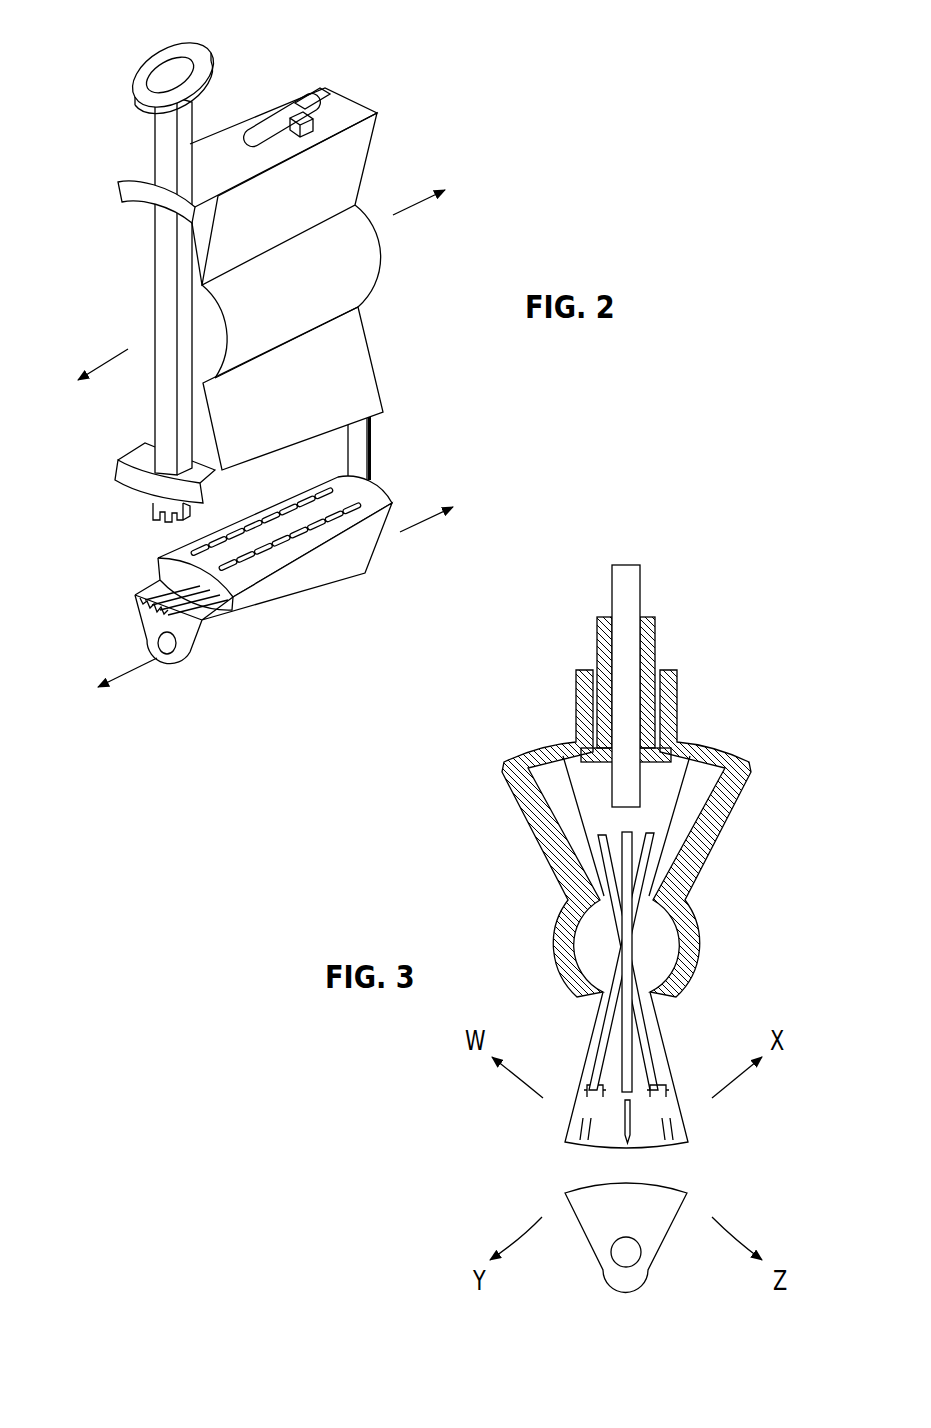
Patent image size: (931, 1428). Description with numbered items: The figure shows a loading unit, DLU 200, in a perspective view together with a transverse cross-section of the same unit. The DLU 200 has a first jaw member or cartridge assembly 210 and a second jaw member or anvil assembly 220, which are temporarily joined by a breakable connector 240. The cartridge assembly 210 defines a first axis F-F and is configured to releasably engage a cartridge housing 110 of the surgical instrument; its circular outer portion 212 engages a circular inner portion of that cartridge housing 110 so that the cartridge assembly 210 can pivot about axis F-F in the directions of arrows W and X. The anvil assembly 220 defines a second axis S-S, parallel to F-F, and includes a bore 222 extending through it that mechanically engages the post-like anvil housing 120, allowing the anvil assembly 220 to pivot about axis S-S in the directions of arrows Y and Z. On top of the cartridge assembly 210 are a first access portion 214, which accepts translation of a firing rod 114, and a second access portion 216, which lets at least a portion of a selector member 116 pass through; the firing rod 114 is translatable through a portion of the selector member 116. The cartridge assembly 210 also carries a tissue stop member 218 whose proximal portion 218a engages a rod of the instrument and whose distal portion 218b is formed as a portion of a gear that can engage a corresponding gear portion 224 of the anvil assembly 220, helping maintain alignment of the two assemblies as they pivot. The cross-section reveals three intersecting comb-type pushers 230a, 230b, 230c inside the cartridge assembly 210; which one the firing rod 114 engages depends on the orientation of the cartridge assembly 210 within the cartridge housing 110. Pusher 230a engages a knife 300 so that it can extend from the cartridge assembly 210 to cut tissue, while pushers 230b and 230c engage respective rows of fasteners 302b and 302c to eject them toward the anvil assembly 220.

In FIG. 2, the DLU 200 is at (291, 368).
In FIG. 2, the cartridge assembly 210 is at (328, 251).
In FIG. 3, the cartridge assembly 210 is at (663, 775).
In FIG. 2, the circular outer portion 212 is at (367, 252).
In FIG. 2, the first access portion 214 is at (300, 123).
In FIG. 2, the second access portion 216 is at (333, 108).
In FIG. 2, the tissue stop member 218 is at (135, 285).
In FIG. 2, the proximal portion 218a is at (137, 63).
In FIG. 2, the distal portion 218b is at (152, 510).
In FIG. 2, the breakable connector 240 is at (373, 460).
In FIG. 2, the anvil assembly 220 is at (251, 574).
In FIG. 3, the anvil assembly 220 is at (633, 1247).
In FIG. 2, the bore 222 is at (168, 643).
In FIG. 2, the portion of anvil assembly 224 is at (217, 595).
In FIG. 3, the firing rod 114 is at (632, 588).
In FIG. 3, the selector member 116 is at (652, 640).
In FIG. 3, the cartridge housing 110 is at (722, 828).
In FIG. 3, the pusher 230a is at (627, 828).
In FIG. 3, the pusher 230b is at (602, 835).
In FIG. 3, the pusher 230c is at (650, 833).
In FIG. 3, the knife 300 is at (630, 1112).
In FIG. 3, the fasteners 302c is at (582, 1127).
In FIG. 3, the fasteners 302b is at (673, 1127).
In FIG. 3, the anvil housing 120 is at (622, 1257).